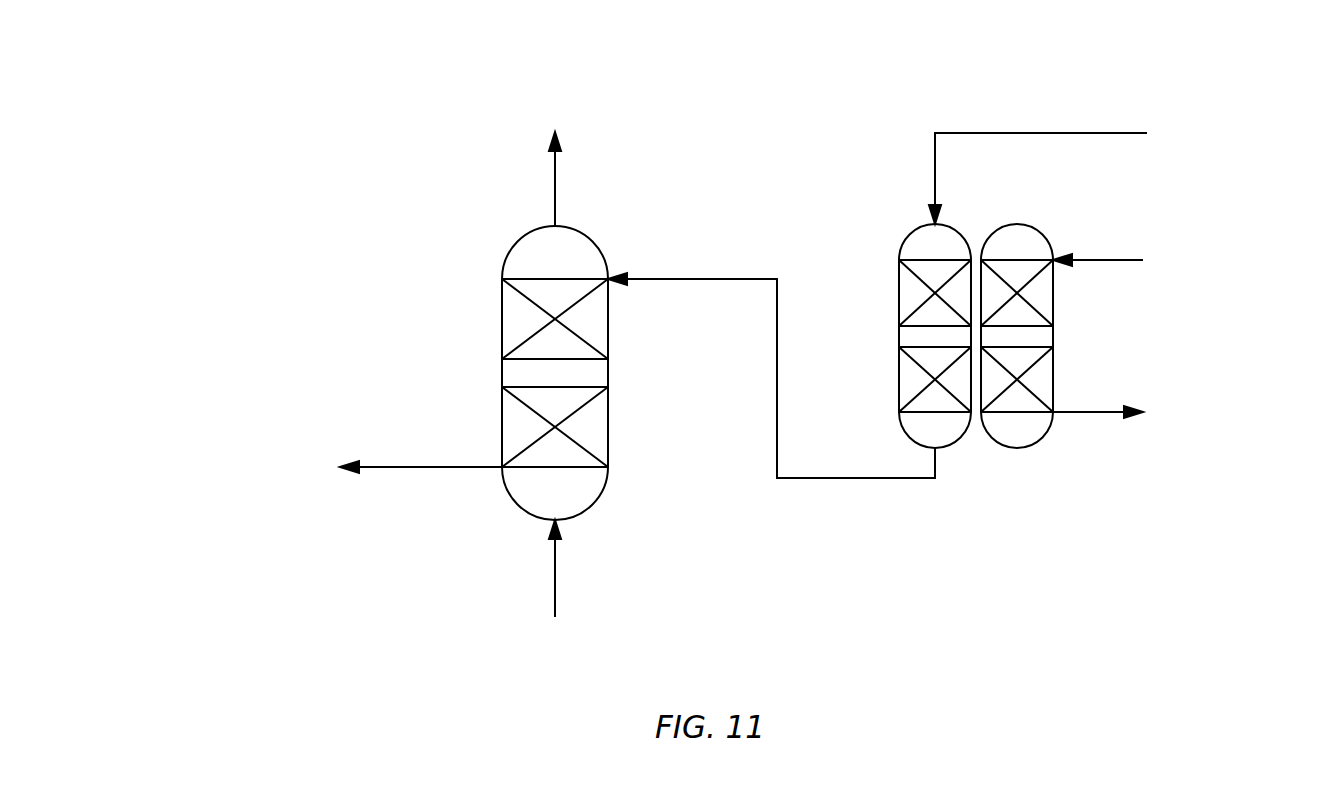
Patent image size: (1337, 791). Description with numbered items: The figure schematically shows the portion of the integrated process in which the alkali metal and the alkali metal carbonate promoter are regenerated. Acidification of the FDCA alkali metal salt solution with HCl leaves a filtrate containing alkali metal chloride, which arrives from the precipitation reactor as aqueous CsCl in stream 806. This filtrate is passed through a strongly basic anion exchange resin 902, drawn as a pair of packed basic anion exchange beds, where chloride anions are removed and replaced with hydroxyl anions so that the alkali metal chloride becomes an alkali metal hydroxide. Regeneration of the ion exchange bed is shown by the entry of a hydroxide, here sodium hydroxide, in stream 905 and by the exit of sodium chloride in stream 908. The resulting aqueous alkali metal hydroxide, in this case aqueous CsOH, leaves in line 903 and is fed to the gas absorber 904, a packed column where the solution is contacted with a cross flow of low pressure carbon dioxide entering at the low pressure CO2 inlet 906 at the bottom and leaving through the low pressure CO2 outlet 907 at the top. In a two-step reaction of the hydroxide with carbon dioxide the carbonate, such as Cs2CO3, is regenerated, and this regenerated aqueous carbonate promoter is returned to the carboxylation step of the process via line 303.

The gas absorber 904 is at (502, 296).
The low pressure CO2 outlet 907 is at (555, 178).
The low pressure CO2 inlet 906 is at (555, 585).
The line 303 is at (423, 468).
The line 903 is at (777, 420).
The strongly basic anion exchange resin 902 is at (1017, 224).
The stream 806 is at (1126, 133).
The stream 905 is at (1128, 260).
The stream 908 is at (1097, 412).